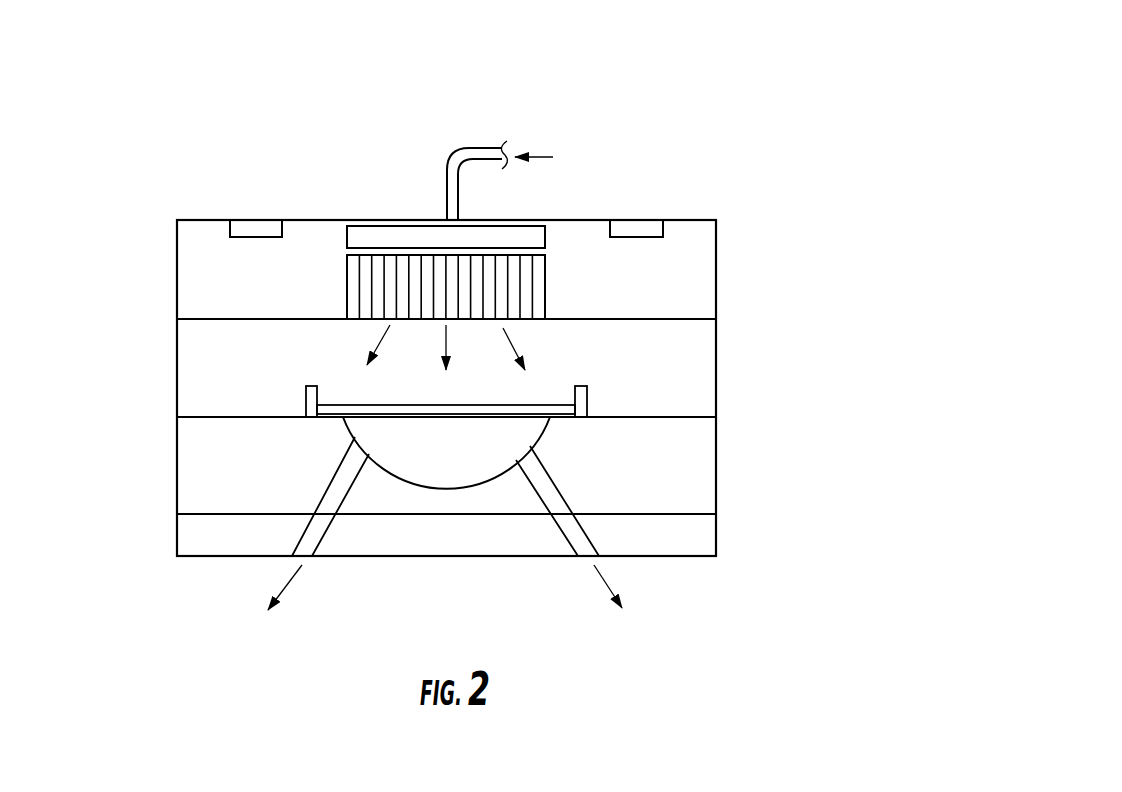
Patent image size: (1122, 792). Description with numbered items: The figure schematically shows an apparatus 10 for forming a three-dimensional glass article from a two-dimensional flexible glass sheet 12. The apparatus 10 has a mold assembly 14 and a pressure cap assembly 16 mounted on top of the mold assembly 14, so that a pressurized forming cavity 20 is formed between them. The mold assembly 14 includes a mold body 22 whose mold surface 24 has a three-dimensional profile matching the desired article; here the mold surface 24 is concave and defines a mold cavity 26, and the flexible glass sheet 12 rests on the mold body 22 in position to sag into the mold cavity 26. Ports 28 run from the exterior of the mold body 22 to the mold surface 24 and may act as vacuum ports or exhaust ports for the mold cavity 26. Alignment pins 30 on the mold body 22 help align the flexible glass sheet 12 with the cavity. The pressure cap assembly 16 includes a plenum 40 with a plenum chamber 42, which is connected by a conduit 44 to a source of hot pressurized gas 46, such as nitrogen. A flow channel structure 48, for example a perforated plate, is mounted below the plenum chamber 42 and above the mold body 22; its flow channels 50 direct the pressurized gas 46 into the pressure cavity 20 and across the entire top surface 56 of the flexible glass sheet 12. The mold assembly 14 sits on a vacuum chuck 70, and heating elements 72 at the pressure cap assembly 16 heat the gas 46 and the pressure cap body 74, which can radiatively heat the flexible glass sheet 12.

The apparatus 10 is at (718, 140).
The flexible glass sheet 12 is at (515, 405).
The mold assembly 14 is at (750, 481).
The pressure cap assembly 16 is at (150, 310).
The pressurized forming cavity 20 is at (683, 360).
The mold body 22 is at (699, 466).
The mold surface 24 is at (452, 486).
The mold cavity 26 is at (437, 445).
The ports 28 is at (325, 500).
The alignment pins 30 is at (306, 400).
The plenum 40 is at (450, 234).
The plenum chamber 42 is at (387, 232).
The conduit 44 is at (473, 150).
The hot pressurized gas 46 is at (542, 150).
The flow channel structure 48 is at (450, 286).
The flow channels 50 is at (357, 283).
The top surface 56 is at (455, 405).
The vacuum chuck 70 is at (371, 540).
The heating elements 72 is at (258, 223).
The pressure cap body 74 is at (703, 288).